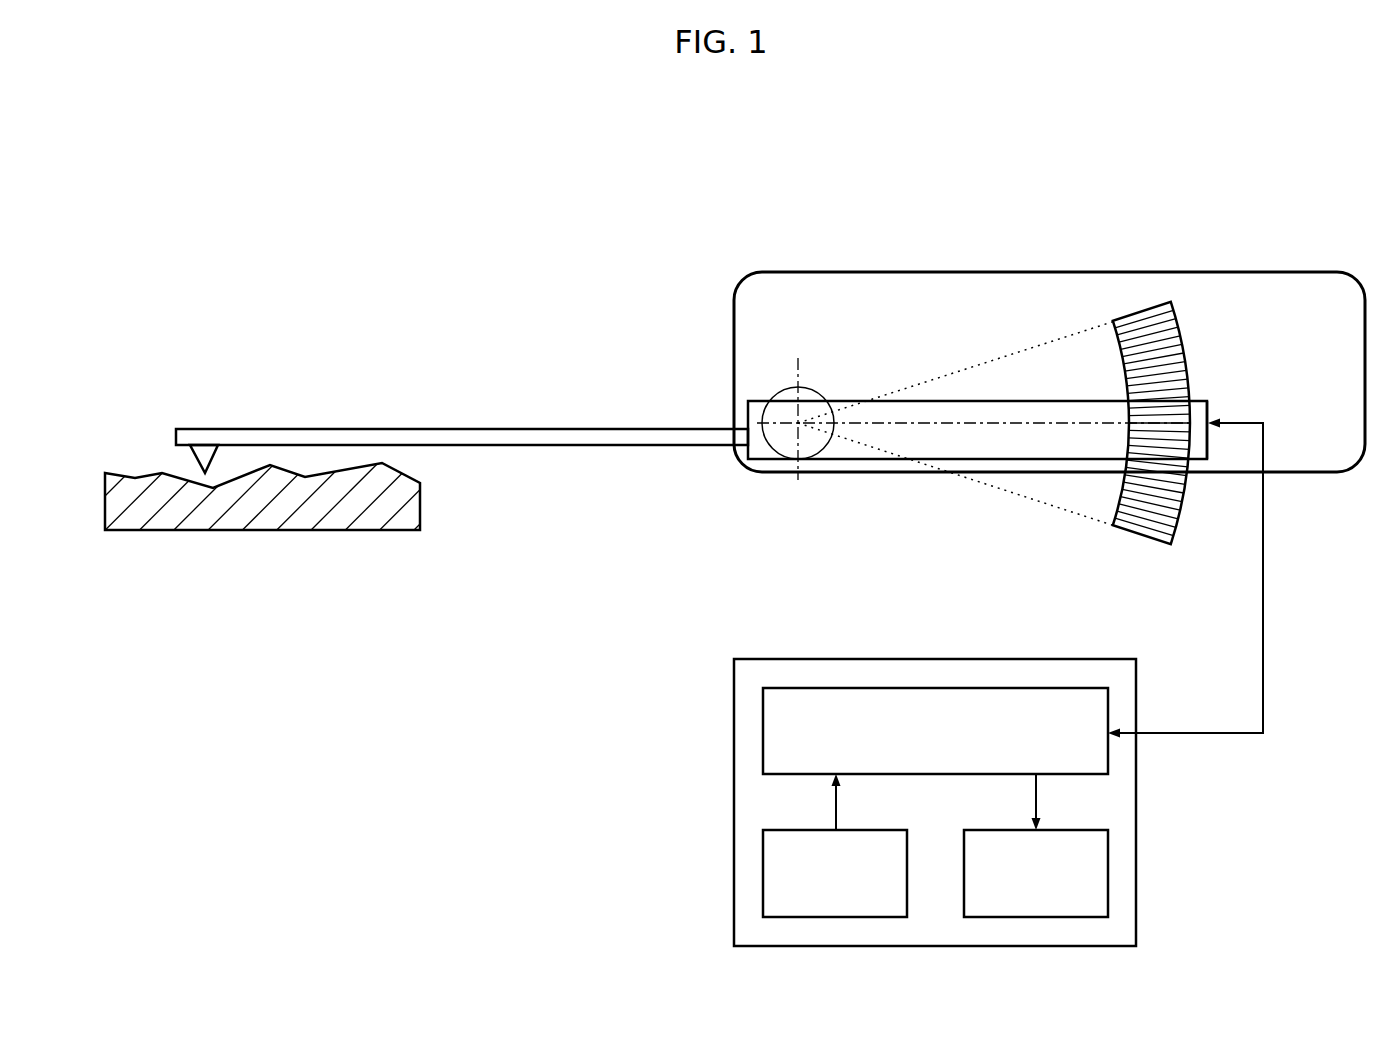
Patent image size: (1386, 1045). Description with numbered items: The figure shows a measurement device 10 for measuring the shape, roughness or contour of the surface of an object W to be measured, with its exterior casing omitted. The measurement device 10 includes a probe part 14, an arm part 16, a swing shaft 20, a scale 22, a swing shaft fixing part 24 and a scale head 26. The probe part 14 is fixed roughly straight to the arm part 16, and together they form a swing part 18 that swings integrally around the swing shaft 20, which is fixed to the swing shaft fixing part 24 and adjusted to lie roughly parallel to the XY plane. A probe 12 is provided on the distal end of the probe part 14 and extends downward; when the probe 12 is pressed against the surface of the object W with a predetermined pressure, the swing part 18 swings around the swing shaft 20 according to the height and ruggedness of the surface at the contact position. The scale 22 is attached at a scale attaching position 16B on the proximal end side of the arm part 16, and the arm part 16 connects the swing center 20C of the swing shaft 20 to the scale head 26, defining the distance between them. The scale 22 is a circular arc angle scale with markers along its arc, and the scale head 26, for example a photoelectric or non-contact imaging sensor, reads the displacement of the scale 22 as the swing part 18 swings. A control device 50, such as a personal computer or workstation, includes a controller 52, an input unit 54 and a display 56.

The measurement device 10 is at (304, 298).
The probe 12 is at (163, 458).
The probe part 14 is at (590, 447).
The arm part 16 is at (978, 459).
The scale attaching position 16B is at (1209, 384).
The swing part 18 is at (548, 545).
The swing shaft 20 is at (797, 418).
The swing center 20C is at (791, 434).
The scale 22 is at (1150, 313).
The swing shaft fixing part 24 is at (1038, 272).
The scale head 26 is at (1234, 410).
The control device 50 is at (940, 659).
The controller 52 is at (763, 733).
The input unit 54 is at (763, 876).
The display 56 is at (1108, 872).
The object to be measured W is at (422, 495).